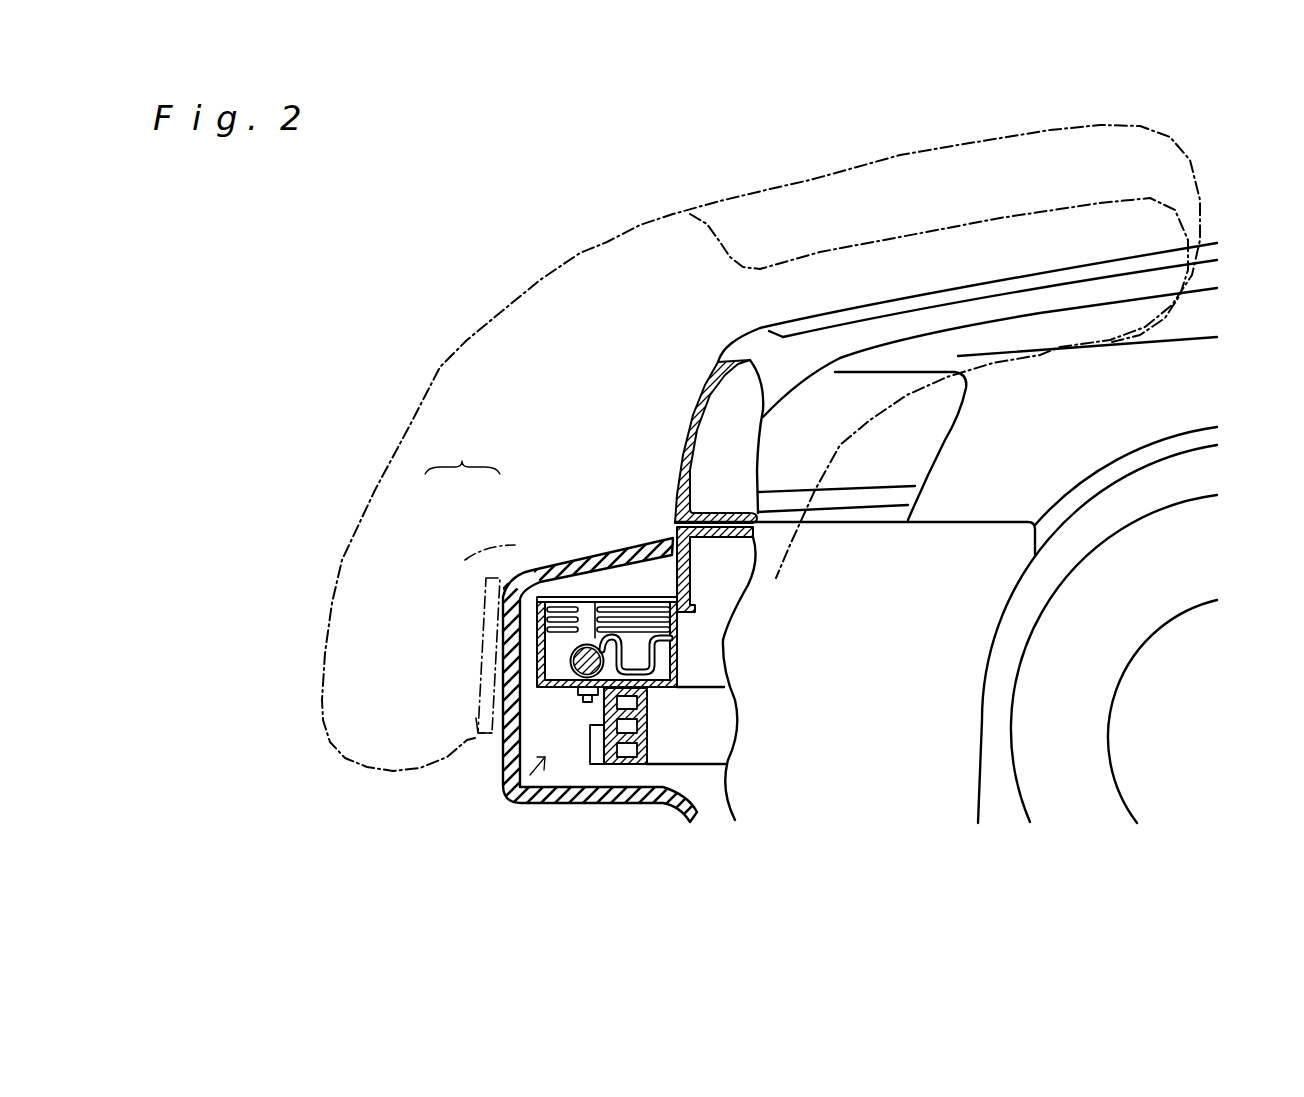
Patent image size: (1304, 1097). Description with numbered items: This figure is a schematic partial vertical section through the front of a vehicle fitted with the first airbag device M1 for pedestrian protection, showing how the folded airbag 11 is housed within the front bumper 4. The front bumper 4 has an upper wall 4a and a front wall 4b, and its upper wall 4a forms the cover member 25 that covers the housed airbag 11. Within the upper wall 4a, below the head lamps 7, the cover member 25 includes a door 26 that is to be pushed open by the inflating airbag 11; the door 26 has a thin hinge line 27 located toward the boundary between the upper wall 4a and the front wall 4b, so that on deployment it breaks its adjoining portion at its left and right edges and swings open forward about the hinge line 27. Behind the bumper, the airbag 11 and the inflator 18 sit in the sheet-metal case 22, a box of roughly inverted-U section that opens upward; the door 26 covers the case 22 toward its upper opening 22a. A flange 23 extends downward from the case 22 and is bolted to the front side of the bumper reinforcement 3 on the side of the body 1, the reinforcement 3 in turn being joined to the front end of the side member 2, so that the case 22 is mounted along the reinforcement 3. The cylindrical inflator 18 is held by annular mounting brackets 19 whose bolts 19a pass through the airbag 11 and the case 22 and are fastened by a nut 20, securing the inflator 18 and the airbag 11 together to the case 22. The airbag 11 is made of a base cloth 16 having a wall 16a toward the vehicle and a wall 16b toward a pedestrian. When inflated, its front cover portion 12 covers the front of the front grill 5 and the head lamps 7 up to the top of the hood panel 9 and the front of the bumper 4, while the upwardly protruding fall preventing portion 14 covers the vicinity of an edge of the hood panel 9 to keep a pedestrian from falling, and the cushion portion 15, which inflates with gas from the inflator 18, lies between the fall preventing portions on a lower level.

The body 1 is at (1183, 390).
The side member 2 is at (712, 735).
The bumper reinforcement 3 is at (643, 752).
The front bumper 4 is at (493, 753).
The upper wall 4a is at (559, 551).
The front wall 4b is at (513, 690).
The front grill 5 is at (688, 404).
The head lamps 7 is at (858, 478).
The hood panel 9 is at (1135, 262).
The airbag 11 is at (458, 332).
The front cover portion 12 is at (355, 544).
The fall preventing portion 14 is at (960, 170).
The cushion portion 15 is at (872, 260).
The base cloth 16 is at (967, 302).
The wall 16a is at (993, 365).
The wall 16b is at (605, 242).
The inflator 18 is at (571, 660).
The annular mounting brackets 19 is at (585, 644).
The bolts 19a is at (590, 704).
The nut 20 is at (584, 704).
The case 22 is at (677, 653).
The upper opening 22a is at (656, 597).
The flange 23 is at (600, 765).
The cover member 25 is at (462, 456).
The door 26 is at (548, 575).
The thin hinge line 27 is at (465, 598).
The airbag device for pedestrian protection M1 is at (518, 788).